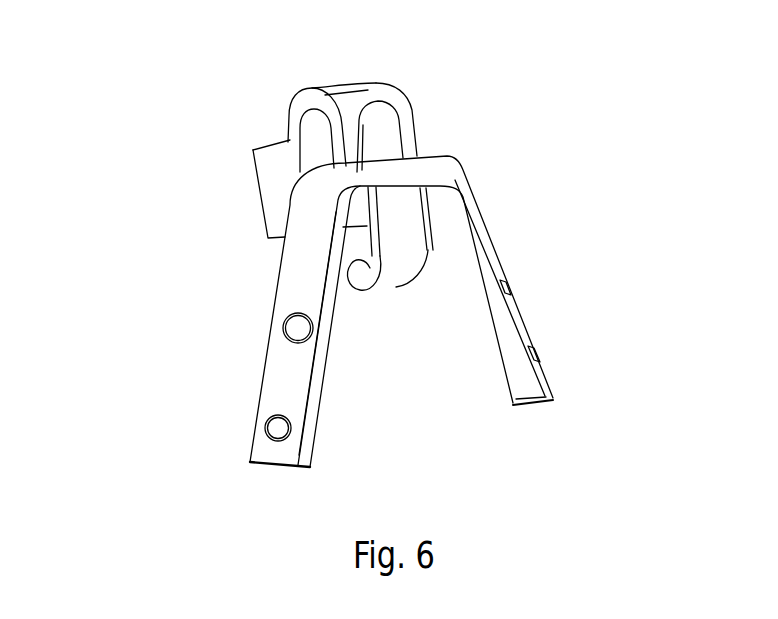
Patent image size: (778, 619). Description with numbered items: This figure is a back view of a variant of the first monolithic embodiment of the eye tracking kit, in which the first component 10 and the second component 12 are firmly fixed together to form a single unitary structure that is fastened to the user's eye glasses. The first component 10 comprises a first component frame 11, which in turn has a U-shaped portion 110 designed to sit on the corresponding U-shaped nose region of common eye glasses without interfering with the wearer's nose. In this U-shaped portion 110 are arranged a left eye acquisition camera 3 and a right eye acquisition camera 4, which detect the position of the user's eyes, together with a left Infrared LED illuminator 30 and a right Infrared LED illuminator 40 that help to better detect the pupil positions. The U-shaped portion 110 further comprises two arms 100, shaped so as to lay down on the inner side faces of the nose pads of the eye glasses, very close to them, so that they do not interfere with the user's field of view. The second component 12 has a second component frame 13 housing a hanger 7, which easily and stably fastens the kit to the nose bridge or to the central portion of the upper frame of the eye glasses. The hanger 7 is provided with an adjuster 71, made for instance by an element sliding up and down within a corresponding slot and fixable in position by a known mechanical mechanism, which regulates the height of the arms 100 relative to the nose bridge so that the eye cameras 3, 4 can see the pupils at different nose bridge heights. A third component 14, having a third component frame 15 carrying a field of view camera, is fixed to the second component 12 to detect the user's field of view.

The first component 10 is at (355, 247).
The first component frame 11 is at (355, 311).
The second component 12 is at (390, 99).
The hanger 7 is at (380, 90).
The second component frame 13 is at (413, 113).
The third component frame 15 is at (290, 170).
The third component 14 is at (238, 200).
The adjuster 71 is at (398, 222).
The left eye acquisition camera 3 is at (318, 327).
The left Infrared LED illuminator 30 is at (290, 415).
The U-shaped portion 110 is at (308, 370).
The arms 100 is at (513, 378).
The right eye acquisition camera 4 is at (500, 288).
The right Infrared LED illuminator 40 is at (528, 352).